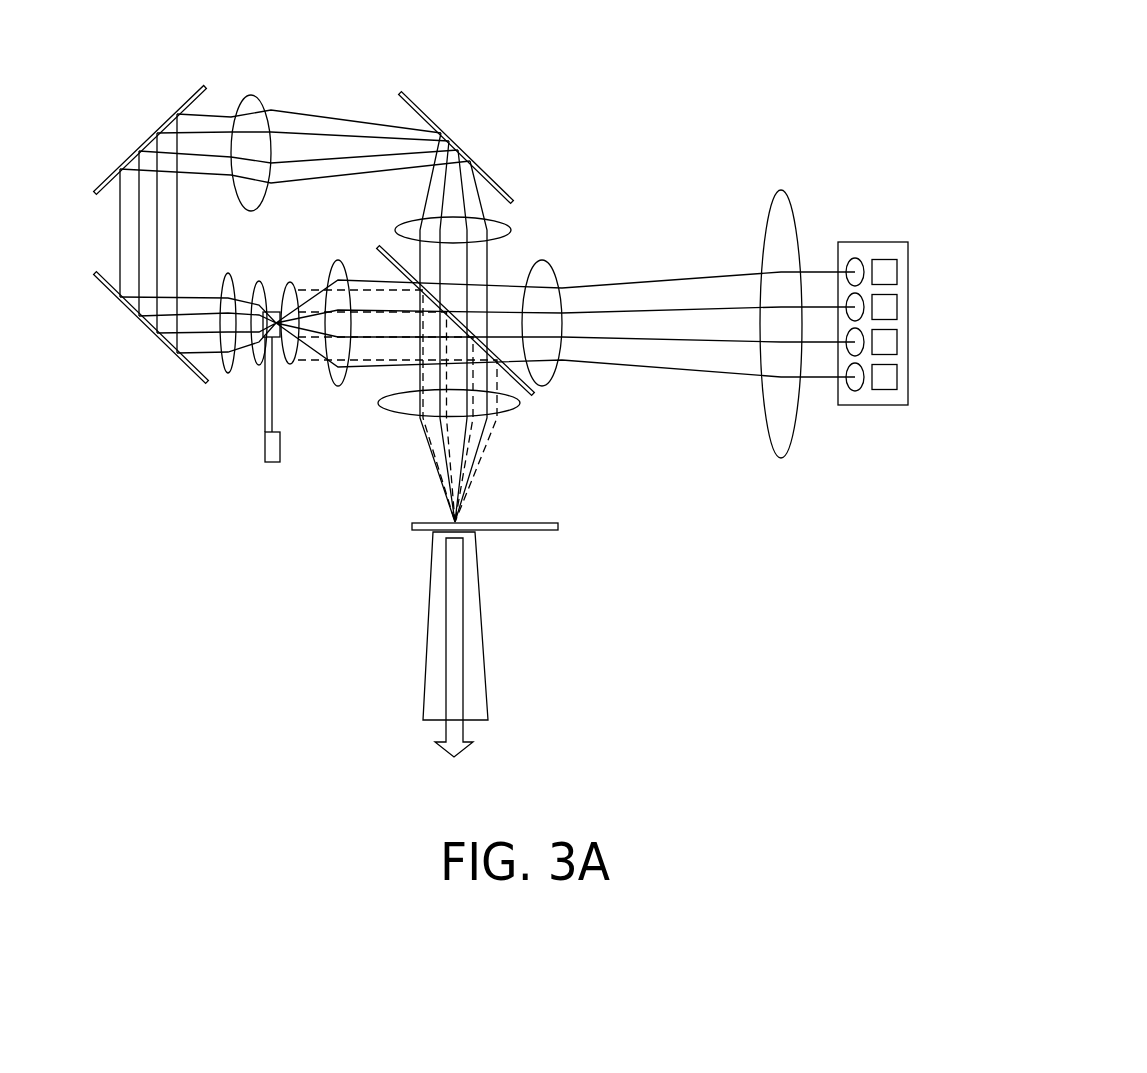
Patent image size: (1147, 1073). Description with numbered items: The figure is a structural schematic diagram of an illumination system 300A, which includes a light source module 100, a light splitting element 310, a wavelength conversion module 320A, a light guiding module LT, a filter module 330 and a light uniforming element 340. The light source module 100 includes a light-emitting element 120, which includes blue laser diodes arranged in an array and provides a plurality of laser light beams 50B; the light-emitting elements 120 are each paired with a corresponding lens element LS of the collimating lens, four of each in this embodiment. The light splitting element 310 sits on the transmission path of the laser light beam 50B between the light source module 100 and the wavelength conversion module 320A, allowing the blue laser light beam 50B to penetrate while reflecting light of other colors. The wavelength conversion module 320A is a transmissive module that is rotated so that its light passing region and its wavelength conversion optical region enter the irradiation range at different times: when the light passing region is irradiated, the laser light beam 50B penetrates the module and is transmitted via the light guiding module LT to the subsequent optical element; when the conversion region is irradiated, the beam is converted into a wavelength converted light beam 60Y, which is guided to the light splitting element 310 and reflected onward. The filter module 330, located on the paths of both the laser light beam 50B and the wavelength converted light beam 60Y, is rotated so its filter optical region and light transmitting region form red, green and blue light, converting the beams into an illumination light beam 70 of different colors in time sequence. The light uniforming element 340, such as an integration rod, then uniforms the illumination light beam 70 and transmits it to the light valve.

The light guiding module LT is at (95, 273).
The laser light beam 50B is at (363, 180).
The wavelength converted light beam 60Y is at (423, 427).
The light source module 100 is at (847, 197).
The lens elements LS is at (857, 263).
The light-emitting element 120 is at (887, 272).
The light splitting element 310 is at (533, 392).
The wavelength conversion module 320A is at (268, 413).
The filter module 330 is at (412, 527).
The light uniforming element 340 is at (482, 630).
The illumination light beam 70 is at (448, 733).
The illumination system 300A is at (792, 680).